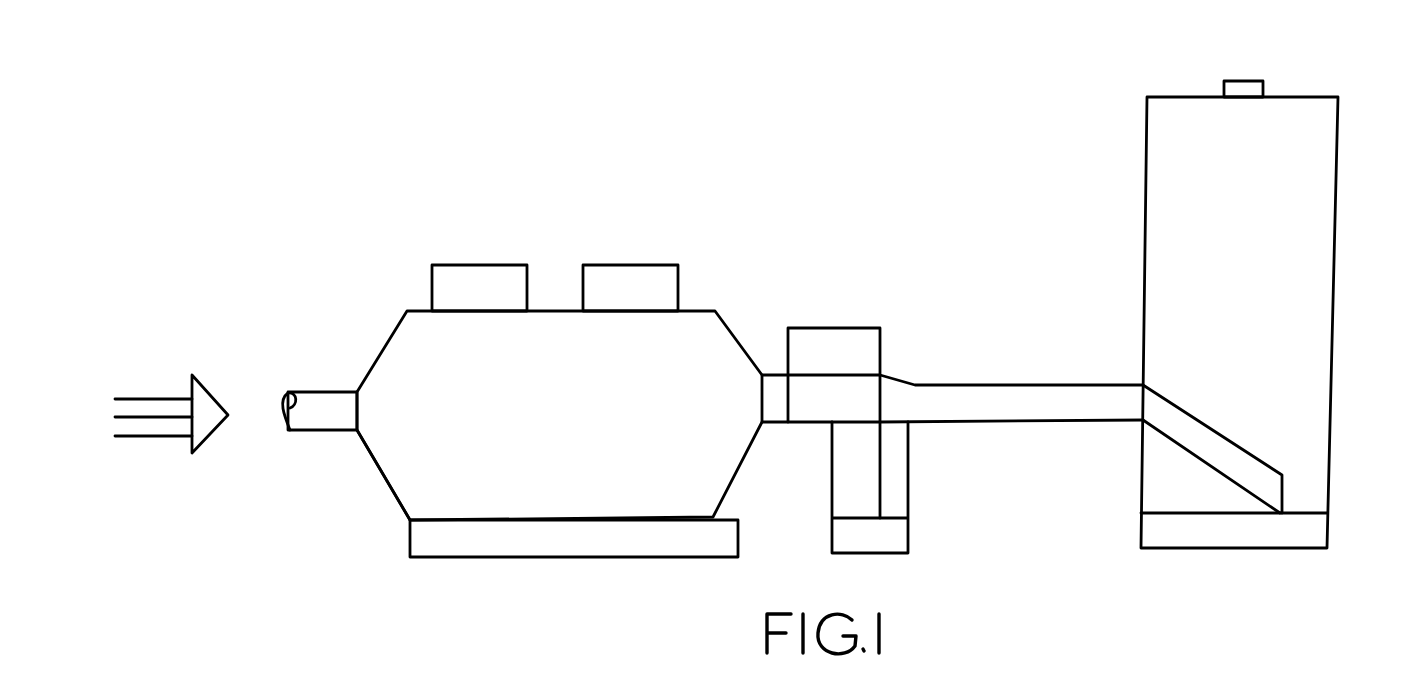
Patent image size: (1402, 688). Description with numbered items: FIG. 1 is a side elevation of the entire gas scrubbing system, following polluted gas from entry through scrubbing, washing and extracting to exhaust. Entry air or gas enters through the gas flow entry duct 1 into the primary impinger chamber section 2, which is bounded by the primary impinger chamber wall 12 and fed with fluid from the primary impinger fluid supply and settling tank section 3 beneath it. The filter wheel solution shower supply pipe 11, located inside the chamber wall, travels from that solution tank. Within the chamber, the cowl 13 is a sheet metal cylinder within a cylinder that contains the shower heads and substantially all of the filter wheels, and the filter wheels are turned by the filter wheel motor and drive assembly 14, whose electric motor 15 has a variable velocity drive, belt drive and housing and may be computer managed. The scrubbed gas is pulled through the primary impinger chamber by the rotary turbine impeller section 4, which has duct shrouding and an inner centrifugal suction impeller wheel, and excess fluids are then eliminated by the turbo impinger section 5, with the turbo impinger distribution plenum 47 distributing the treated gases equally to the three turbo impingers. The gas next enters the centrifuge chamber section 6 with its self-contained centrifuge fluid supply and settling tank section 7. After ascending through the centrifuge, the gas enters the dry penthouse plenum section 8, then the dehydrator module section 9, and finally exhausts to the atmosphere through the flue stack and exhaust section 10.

The gas flow entry duct 1 is at (288, 430).
The primary impinger chamber section 2 is at (592, 410).
The primary impinger fluid supply and settling tank section 3 is at (555, 553).
The rotary turbine impeller section 4 is at (825, 410).
The turbo impinger section 5 is at (1053, 337).
The centrifuge chamber section 6 is at (1245, 532).
The centrifuge fluid supply and settling tank section 7 is at (1270, 312).
The penthouse plenum section 8 is at (1262, 232).
The dehydrator module section 9 is at (1272, 145).
The flue stack and exhaust section 10 is at (1335, 40).
The filter wheel solution shower supply pipe 11 is at (385, 487).
The primary impinger chamber wall 12 is at (600, 192).
The cowl 13 is at (692, 195).
The filter wheel motor and drive assembly 14 is at (923, 278).
The filter wheel motor and drive assembly 15 is at (975, 444).
The turbo impinger distribution plenum 47 is at (1162, 458).